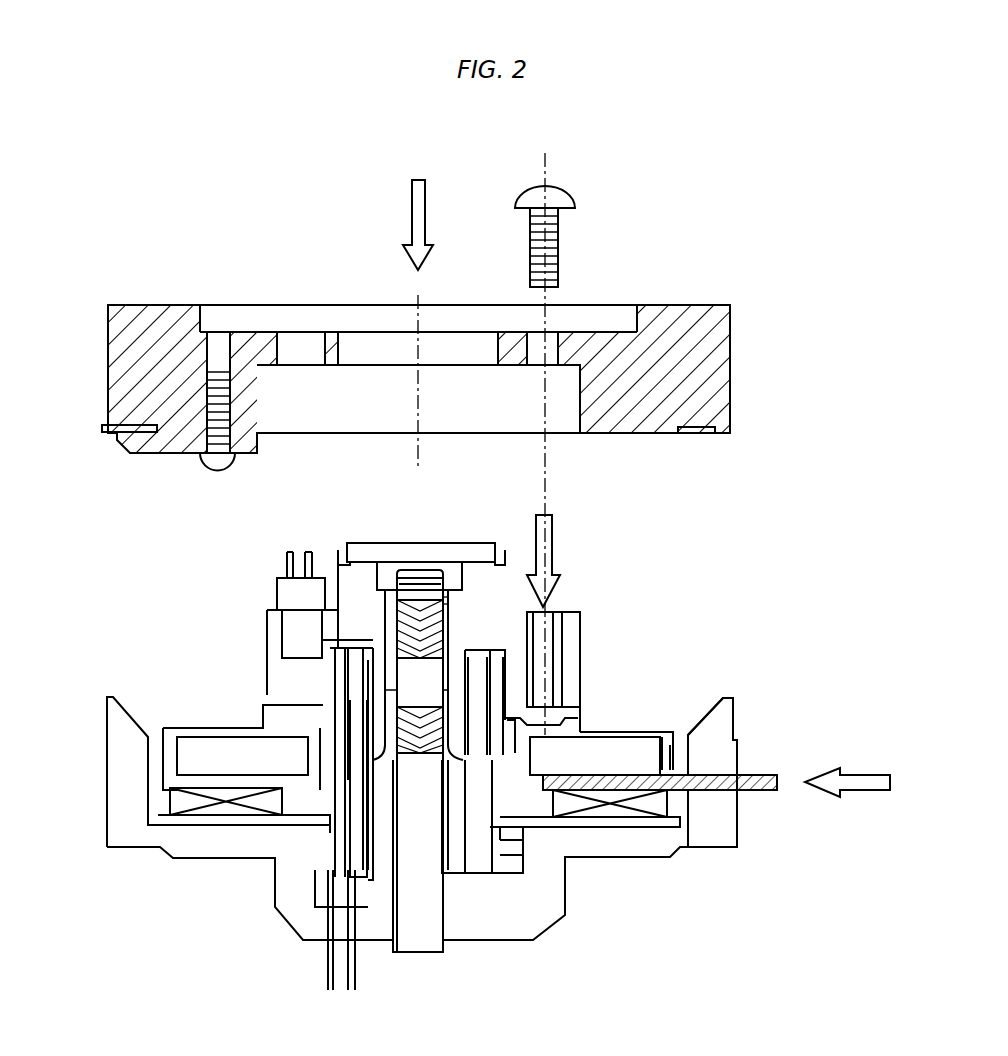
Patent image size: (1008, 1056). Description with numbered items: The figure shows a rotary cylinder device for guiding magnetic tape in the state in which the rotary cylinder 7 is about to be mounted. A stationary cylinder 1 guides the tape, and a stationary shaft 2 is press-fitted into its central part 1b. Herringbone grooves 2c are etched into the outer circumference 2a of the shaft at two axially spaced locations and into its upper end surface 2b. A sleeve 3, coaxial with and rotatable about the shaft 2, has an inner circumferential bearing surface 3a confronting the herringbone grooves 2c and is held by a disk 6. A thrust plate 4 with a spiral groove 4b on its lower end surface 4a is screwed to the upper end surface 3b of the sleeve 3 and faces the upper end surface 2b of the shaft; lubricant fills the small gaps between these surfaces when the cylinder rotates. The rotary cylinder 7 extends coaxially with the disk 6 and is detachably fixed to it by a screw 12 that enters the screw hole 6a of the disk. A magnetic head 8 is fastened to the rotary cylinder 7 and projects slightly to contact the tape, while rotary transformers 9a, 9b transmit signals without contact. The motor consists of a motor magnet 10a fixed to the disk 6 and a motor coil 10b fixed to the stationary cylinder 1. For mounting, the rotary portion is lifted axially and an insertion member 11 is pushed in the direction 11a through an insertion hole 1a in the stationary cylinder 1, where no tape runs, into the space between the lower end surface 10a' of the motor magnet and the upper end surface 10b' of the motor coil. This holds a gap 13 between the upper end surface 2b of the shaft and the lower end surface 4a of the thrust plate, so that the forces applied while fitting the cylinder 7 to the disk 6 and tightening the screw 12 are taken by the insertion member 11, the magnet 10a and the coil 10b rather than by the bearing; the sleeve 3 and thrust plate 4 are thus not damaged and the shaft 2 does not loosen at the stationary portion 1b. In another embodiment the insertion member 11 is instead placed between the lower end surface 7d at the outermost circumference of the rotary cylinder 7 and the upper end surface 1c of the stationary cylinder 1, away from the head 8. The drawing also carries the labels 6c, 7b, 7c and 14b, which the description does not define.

The stationary cylinder 1 is at (107, 820).
The insertion hole 1a is at (740, 848).
The central part of the stationary cylinder 1b is at (447, 920).
The upper end surface of the stationary cylinder 1c is at (740, 693).
The stationary shaft 2 is at (405, 933).
The outer circumference of the shaft 2a is at (347, 548).
The upper end surface of the shaft 2b is at (392, 600).
The herringbone grooves 2c is at (448, 690).
The sleeve 3 is at (450, 623).
The inner circumferential bearing surface 3a is at (447, 603).
The upper end surface of the sleeve 3b is at (338, 588).
The thrust plate 4 is at (377, 565).
The lower end surface of the thrust plate 4a is at (455, 568).
The spiral groove 4b is at (468, 560).
The disk 6 is at (338, 572).
The screw hole of the disk 6a is at (562, 630).
The terminal block edge 6c is at (455, 597).
The rotary cylinder 7 is at (108, 340).
The pressing direction 7b is at (418, 207).
The jig screw hole 7c is at (497, 350).
The lower end surface of the rotary cylinder 7d is at (720, 437).
The magnetic head 8 is at (102, 430).
The rotary transformer 9a is at (338, 825).
The rotary transformer 9b is at (357, 848).
The motor magnet 10a is at (601, 730).
The lower end surface of the motor magnet 10a' is at (666, 730).
The motor coil 10b is at (590, 847).
The upper end surface of the motor coil 10b' is at (675, 847).
The insertion member 11 is at (745, 795).
The insertion direction 11a is at (854, 798).
The screw 12 is at (560, 239).
The gap 13 is at (420, 570).
The pressing direction 14b is at (543, 546).